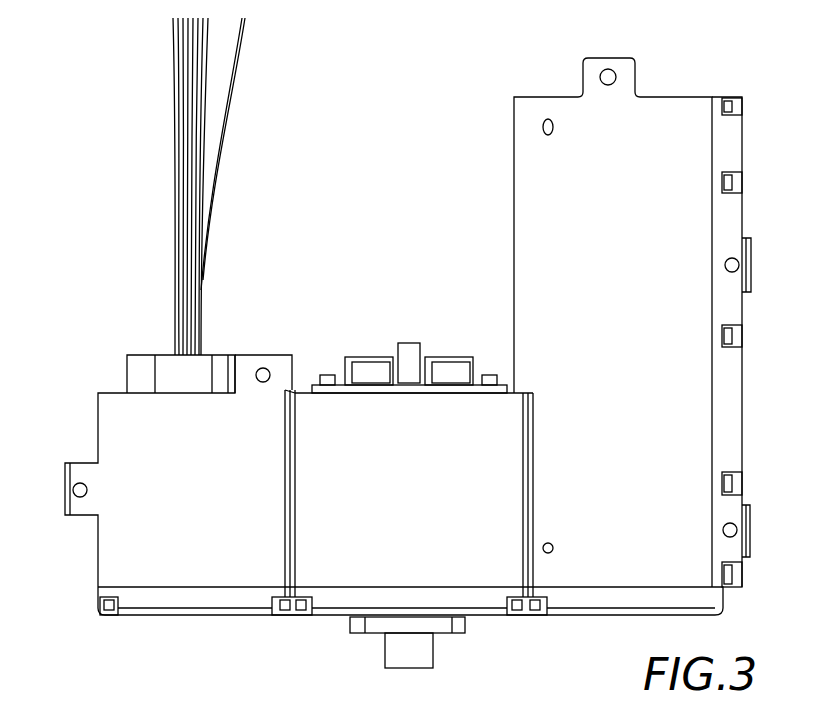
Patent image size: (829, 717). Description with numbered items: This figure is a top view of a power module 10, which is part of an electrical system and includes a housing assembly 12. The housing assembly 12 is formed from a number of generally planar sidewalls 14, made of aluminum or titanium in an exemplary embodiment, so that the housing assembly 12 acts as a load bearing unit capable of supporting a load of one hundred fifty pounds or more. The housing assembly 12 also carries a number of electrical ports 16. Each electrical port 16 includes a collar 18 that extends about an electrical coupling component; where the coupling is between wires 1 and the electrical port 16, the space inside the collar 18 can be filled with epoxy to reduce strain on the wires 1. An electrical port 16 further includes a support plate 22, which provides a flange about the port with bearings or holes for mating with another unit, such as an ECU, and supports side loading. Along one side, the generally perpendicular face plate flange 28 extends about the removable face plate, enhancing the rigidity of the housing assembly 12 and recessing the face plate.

The wires 1 is at (177, 113).
The power module 10 is at (72, 413).
The housing assembly 12 is at (623, 568).
The sidewalls 14 is at (523, 217).
The electrical port 16 is at (210, 355).
The collar 18 is at (128, 362).
The support plate 22 is at (465, 627).
The face plate flange 28 is at (732, 378).